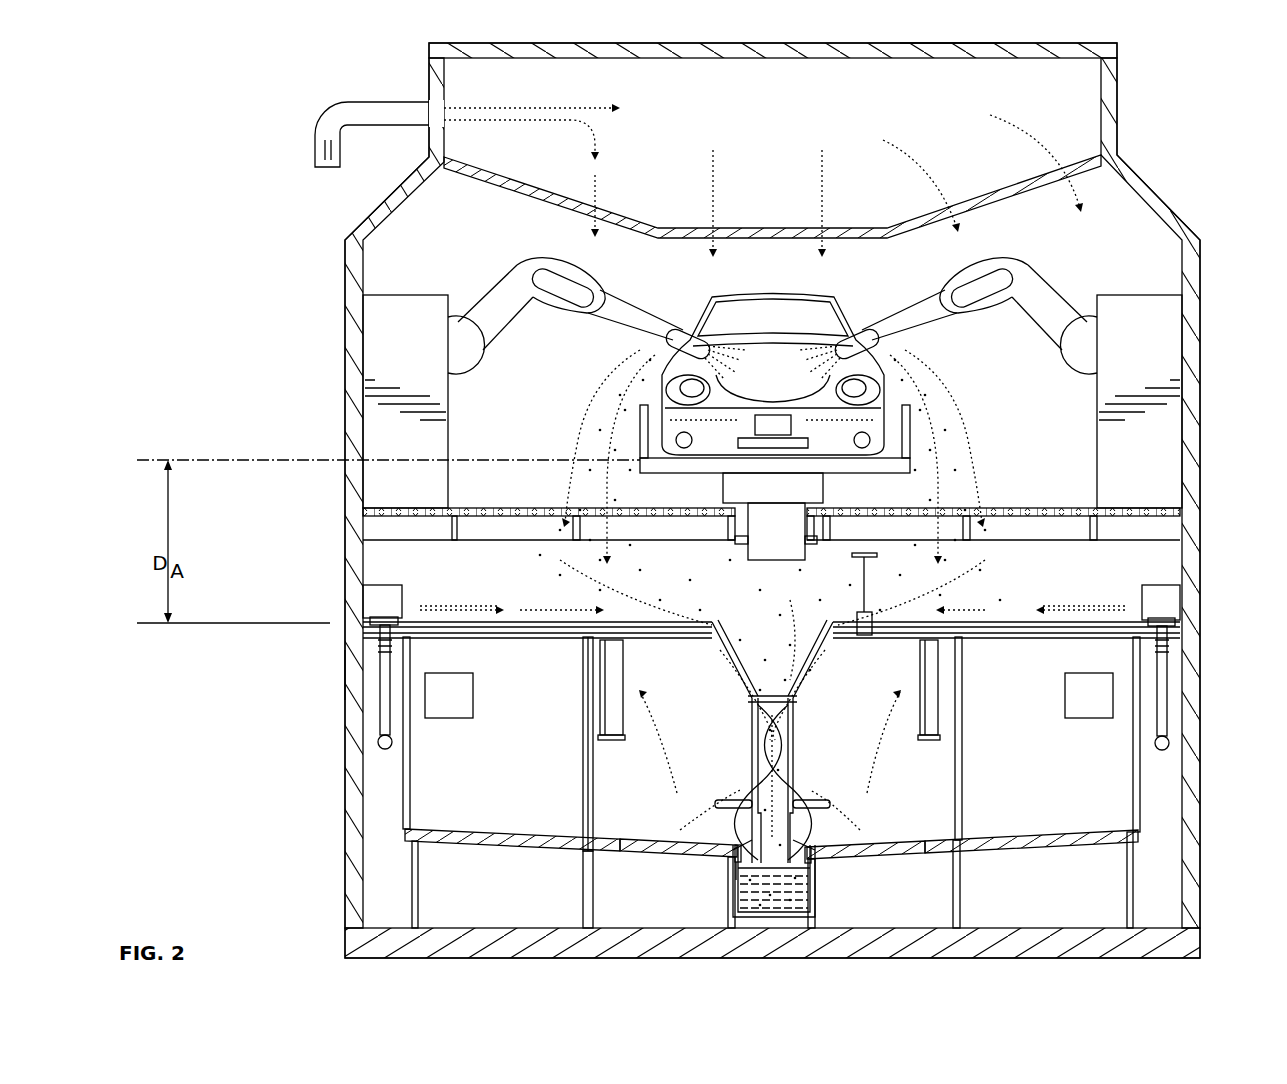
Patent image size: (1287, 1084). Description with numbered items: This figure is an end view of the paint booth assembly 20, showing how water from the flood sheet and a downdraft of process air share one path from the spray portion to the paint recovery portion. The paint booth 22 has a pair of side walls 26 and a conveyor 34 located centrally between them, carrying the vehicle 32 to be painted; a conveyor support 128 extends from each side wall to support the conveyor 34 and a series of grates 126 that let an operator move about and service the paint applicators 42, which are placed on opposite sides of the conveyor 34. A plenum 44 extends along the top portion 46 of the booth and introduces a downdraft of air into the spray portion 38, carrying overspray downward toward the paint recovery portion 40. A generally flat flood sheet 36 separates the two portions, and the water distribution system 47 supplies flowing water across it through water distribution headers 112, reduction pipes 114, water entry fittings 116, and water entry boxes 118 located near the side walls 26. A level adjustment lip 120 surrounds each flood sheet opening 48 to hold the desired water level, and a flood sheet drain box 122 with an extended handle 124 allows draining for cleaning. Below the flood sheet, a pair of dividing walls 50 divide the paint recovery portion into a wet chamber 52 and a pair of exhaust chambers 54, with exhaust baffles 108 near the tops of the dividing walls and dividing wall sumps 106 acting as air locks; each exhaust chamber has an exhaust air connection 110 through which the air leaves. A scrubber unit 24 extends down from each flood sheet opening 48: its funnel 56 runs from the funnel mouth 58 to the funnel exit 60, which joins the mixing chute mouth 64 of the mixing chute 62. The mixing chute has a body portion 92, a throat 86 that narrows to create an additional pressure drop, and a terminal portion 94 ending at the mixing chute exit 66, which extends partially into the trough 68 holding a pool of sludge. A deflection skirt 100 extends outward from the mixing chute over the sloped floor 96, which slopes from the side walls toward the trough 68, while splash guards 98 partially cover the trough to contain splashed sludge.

The paint booth assembly 20 is at (322, 68).
The paint booth 22 is at (345, 550).
The scrubber unit 24 is at (745, 752).
The side walls 26 is at (345, 675).
The vehicle 32 is at (853, 310).
The conveyor 34 is at (830, 503).
The flood sheet 36 is at (462, 620).
The spray portion 38 is at (521, 401).
The paint recovery portion 40 is at (468, 768).
The paint applicators 42 is at (520, 283).
The plenum 44 is at (746, 103).
The top portion 46 is at (950, 48).
The water distribution system 47 is at (1165, 610).
The flood sheet openings 48 is at (777, 624).
The dividing walls 50 is at (588, 745).
The wet chamber 52 is at (621, 781).
The exhaust chambers 54 is at (491, 708).
The funnel 56 is at (812, 662).
The funnel mouth 58 is at (740, 605).
The funnel exit 60 is at (795, 700).
The mixing chute 62 is at (752, 720).
The mixing chute mouth 64 is at (795, 704).
The mixing chute exit 66 is at (812, 875).
The trough 68 is at (740, 912).
The throat 86 is at (795, 822).
The body portion 92 is at (758, 770).
The terminal portion 94 is at (750, 840).
The sloped floor 96 is at (660, 840).
The splash guards 98 is at (736, 886).
The deflection skirt 100 is at (808, 800).
The dividing wall sumps 106 is at (572, 838).
The exhaust baffles 108 is at (605, 705).
The exhaust air connection 110 is at (447, 720).
The water distribution headers 112 is at (378, 745).
The reduction pipes 114 is at (380, 695).
The water entry fittings 116 is at (372, 630).
The water entry boxes 118 is at (380, 585).
The level adjustment lip 120 is at (712, 618).
The flood sheet drain box 122 is at (882, 605).
The extended handle 124 is at (875, 580).
The grates 126 is at (1045, 515).
The conveyor support 128 is at (482, 542).